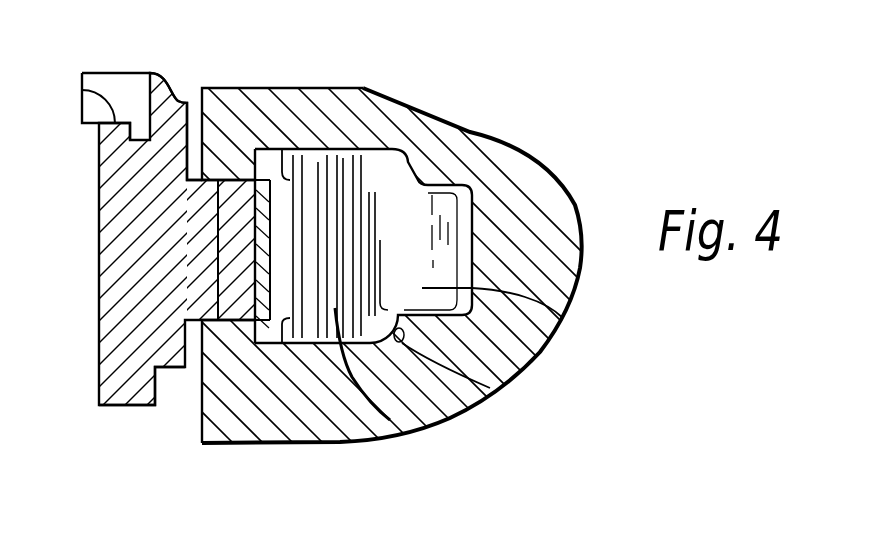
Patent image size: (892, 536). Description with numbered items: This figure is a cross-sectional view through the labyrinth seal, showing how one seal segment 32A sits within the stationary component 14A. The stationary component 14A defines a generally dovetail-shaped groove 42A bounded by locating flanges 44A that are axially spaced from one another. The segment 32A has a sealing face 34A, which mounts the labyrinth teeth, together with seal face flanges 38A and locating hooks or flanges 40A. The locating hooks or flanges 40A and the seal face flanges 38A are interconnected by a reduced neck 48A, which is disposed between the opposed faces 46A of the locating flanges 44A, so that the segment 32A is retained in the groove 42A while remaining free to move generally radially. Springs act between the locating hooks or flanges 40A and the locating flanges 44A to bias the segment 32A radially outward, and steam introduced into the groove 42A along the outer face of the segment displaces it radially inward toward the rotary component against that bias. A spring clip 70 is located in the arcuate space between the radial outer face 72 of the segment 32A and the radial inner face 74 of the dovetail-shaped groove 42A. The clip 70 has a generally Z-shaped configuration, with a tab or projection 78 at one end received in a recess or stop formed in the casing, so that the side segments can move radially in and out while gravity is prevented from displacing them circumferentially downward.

The stationary component 14A is at (492, 148).
The segment 32A is at (177, 212).
The sealing face 34A is at (99, 250).
The seal face flange 38A is at (138, 390).
The locating hook or flange 40A is at (324, 345).
The dovetail-shaped groove 42A is at (398, 162).
The locating flange 44A is at (232, 88).
The opposed face 46A is at (228, 324).
The reduced neck 48A is at (203, 290).
The spring clip 70 is at (390, 420).
The radial outer face 72 is at (318, 205).
The radial inner face 74 is at (490, 388).
The tab or projection 78 is at (560, 320).